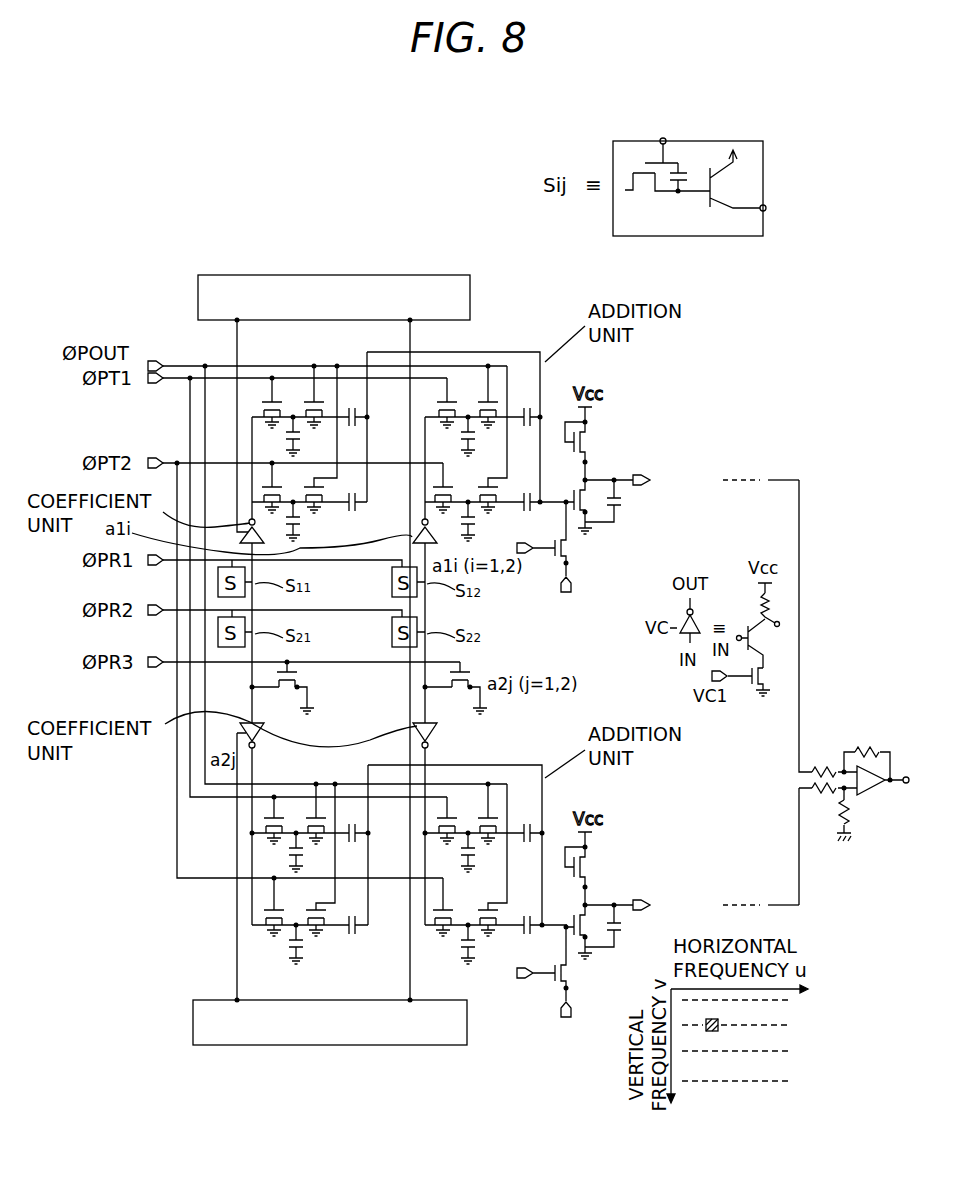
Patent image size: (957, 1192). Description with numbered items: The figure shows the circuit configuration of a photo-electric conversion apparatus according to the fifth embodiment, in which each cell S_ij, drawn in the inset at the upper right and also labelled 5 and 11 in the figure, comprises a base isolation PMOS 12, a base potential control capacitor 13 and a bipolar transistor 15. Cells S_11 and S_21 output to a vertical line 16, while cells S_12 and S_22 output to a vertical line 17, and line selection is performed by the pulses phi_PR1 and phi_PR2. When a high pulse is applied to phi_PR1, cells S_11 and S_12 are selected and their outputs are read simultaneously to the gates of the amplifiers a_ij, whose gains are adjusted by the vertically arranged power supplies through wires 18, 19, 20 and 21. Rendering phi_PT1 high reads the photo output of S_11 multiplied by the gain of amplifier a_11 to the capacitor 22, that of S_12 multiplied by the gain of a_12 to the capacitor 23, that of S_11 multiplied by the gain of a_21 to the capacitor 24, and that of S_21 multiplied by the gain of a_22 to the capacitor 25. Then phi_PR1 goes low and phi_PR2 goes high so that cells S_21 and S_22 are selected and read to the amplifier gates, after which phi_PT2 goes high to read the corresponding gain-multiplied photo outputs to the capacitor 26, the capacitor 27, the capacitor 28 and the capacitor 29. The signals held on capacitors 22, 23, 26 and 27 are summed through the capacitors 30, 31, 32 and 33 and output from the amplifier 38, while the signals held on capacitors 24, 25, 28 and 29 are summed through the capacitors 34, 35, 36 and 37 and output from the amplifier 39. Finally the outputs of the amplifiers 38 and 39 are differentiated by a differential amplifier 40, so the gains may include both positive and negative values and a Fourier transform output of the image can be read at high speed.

The load transistor 5 is at (666, 637).
The switch unit cell 11 is at (741, 238).
The base isolation PMOS 12 is at (648, 163).
The base potential control capacitor 13 is at (688, 173).
The bipolar transistor 15 is at (752, 186).
The vertical line 16 is at (292, 670).
The vertical line 17 is at (472, 673).
The wire 18 is at (334, 403).
The wire 19 is at (423, 659).
The wire 20 is at (330, 889).
The wire 21 is at (424, 988).
The capacitor 22 is at (311, 433).
The capacitor 23 is at (484, 433).
The capacitor 24 is at (310, 827).
The capacitor 25 is at (484, 854).
The capacitor 26 is at (309, 453).
The capacitor 27 is at (495, 453).
The capacitor 28 is at (308, 940).
The capacitor 29 is at (482, 940).
The capacitor 30 is at (352, 395).
The capacitor 31 is at (527, 405).
The capacitor 32 is at (352, 492).
The capacitor 33 is at (527, 492).
The capacitor 34 is at (352, 822).
The capacitor 35 is at (527, 823).
The capacitor 36 is at (361, 914).
The capacitor 37 is at (527, 914).
The amplifier 38 is at (600, 470).
The amplifier 39 is at (605, 897).
The differential amplifier 40 is at (835, 745).